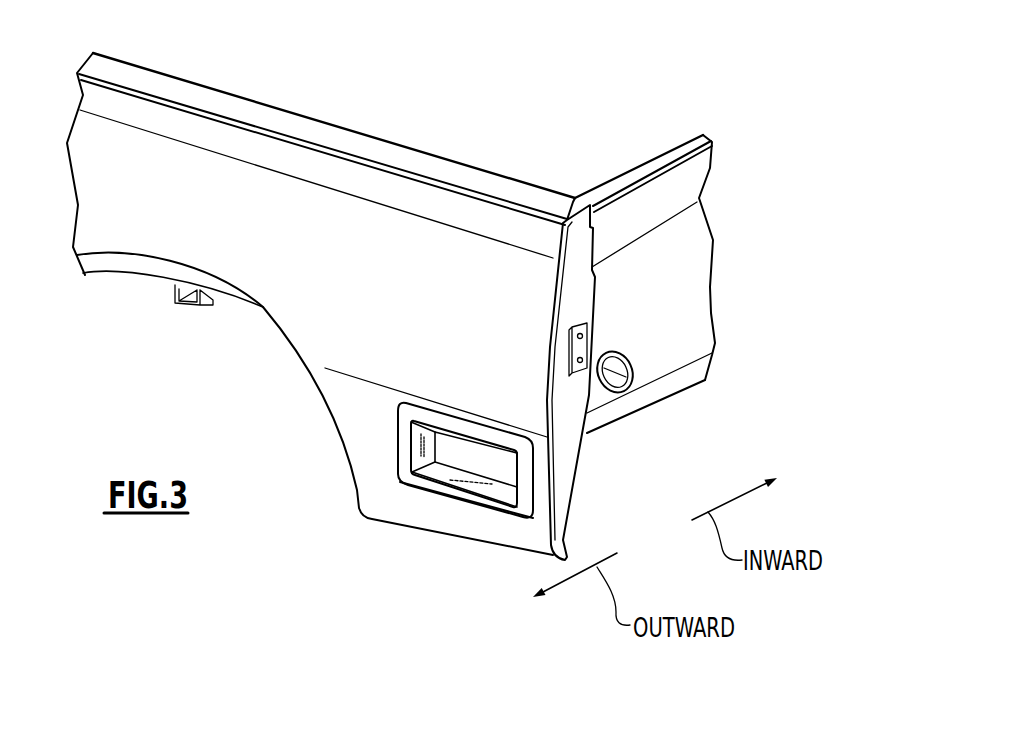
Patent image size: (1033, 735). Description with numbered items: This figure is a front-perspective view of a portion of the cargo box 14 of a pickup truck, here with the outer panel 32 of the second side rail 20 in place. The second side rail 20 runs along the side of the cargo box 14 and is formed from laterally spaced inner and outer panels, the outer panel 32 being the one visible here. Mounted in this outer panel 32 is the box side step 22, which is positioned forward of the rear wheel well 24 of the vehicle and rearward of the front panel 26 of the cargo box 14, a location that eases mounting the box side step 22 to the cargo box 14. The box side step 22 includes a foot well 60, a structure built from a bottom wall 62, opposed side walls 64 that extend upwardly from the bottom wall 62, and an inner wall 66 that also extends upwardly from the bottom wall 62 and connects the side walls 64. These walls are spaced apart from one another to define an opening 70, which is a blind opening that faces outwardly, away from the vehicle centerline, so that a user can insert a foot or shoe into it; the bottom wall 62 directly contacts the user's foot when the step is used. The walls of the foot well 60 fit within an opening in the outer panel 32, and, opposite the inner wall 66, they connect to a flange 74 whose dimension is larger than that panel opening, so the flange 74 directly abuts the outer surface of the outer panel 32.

The cargo box 14 is at (552, 111).
The second side rail 20 is at (401, 136).
The box side step 22 is at (446, 412).
The rear wheel well 24 is at (275, 447).
The front panel 26 is at (617, 393).
The outer panel 32 is at (443, 248).
The foot well 60 is at (442, 506).
The bottom wall 62 is at (448, 473).
The side walls 64 is at (425, 451).
The inner wall 66 is at (503, 468).
The opening 70 is at (472, 455).
The flange 74 is at (458, 495).